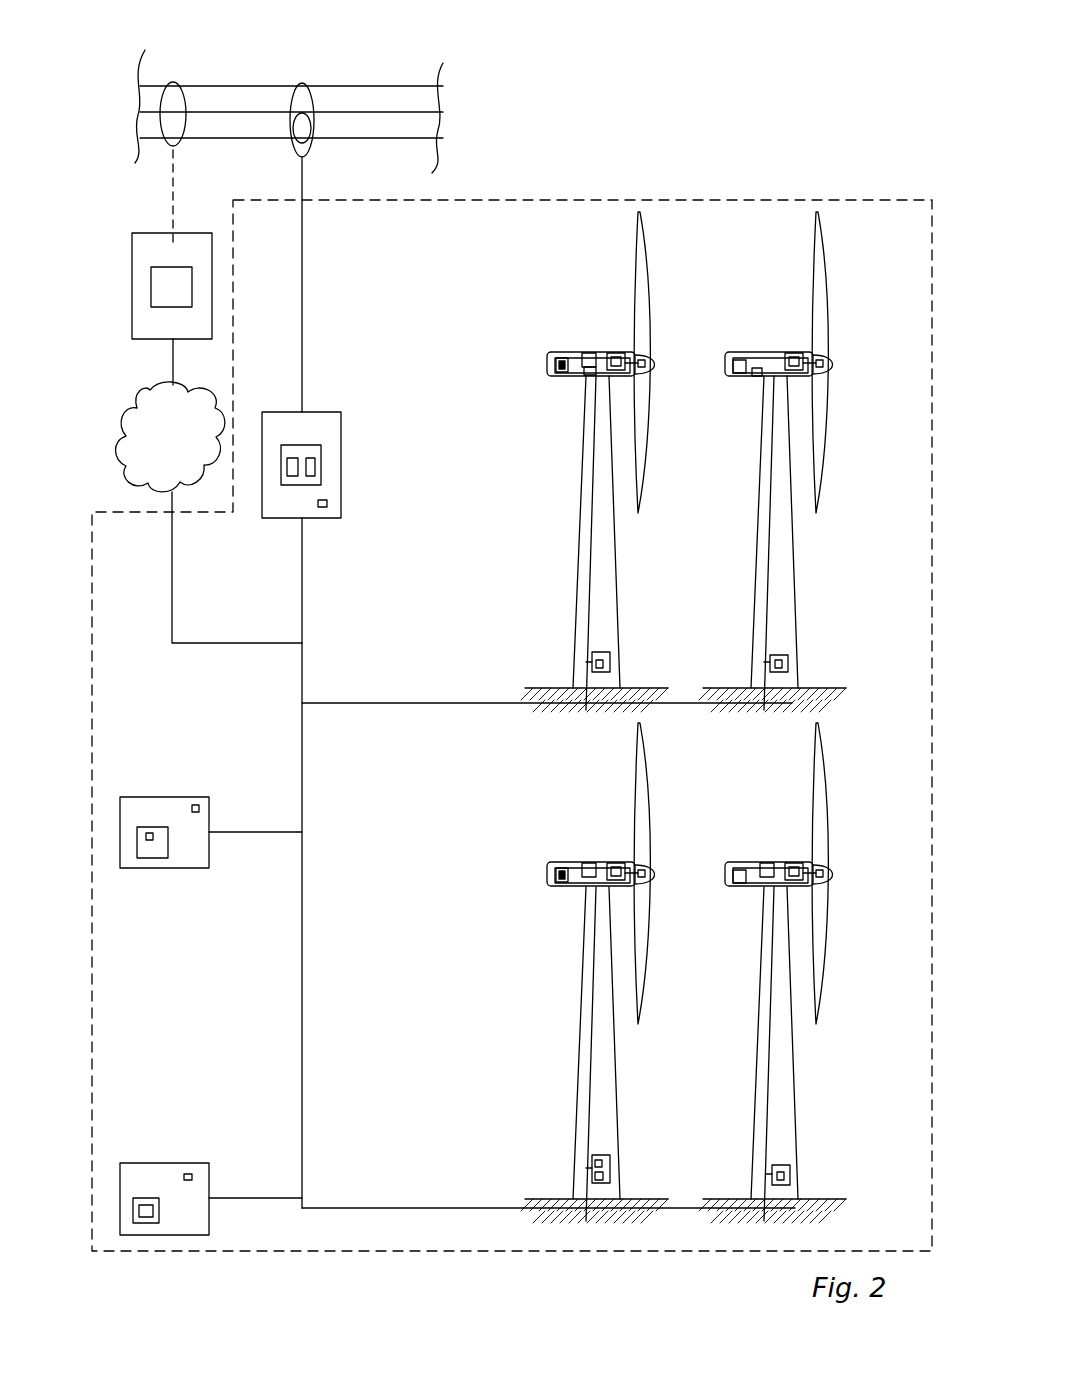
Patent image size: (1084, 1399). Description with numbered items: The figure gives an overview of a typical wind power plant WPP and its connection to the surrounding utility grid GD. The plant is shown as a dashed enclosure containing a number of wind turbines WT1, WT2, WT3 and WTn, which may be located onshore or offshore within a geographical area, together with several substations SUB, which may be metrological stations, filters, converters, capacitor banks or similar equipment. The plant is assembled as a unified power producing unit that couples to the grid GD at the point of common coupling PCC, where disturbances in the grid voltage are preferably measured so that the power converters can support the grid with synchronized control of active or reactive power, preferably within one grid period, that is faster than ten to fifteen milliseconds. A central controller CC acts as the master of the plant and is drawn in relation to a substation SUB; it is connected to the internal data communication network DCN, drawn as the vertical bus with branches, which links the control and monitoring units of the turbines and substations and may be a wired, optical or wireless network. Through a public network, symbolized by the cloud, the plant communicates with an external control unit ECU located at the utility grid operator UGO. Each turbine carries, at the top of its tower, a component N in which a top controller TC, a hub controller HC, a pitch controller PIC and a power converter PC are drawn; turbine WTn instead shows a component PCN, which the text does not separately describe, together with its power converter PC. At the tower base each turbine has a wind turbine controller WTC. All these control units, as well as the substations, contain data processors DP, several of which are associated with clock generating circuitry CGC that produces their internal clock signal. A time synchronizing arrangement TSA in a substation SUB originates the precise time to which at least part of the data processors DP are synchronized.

The utility grid GD is at (291, 62).
The point of common coupling PCC is at (306, 150).
The external control unit ECU is at (172, 277).
The utility grid operator UGO is at (212, 318).
The data communication network DCN is at (303, 998).
The wind power plant WPP is at (450, 1252).
The substation SUB is at (342, 448).
The central controller CC is at (205, 796).
The time synchronizing arrangement TSA is at (150, 855).
The power converter PC is at (321, 470).
The clock generating circuitry CGC is at (310, 456).
The data processor DP is at (287, 457).
The wind turbine WT3 is at (570, 264).
The wind turbine WTn is at (758, 264).
The wind turbine WT1 is at (572, 784).
The wind turbine WT2 is at (742, 784).
The nacelle N is at (558, 378).
The top controller TC is at (564, 358).
The power controller node PCN is at (767, 355).
The hub controller HC is at (613, 355).
The pitch controller PIC is at (645, 364).
The wind turbine controller WTC is at (600, 655).